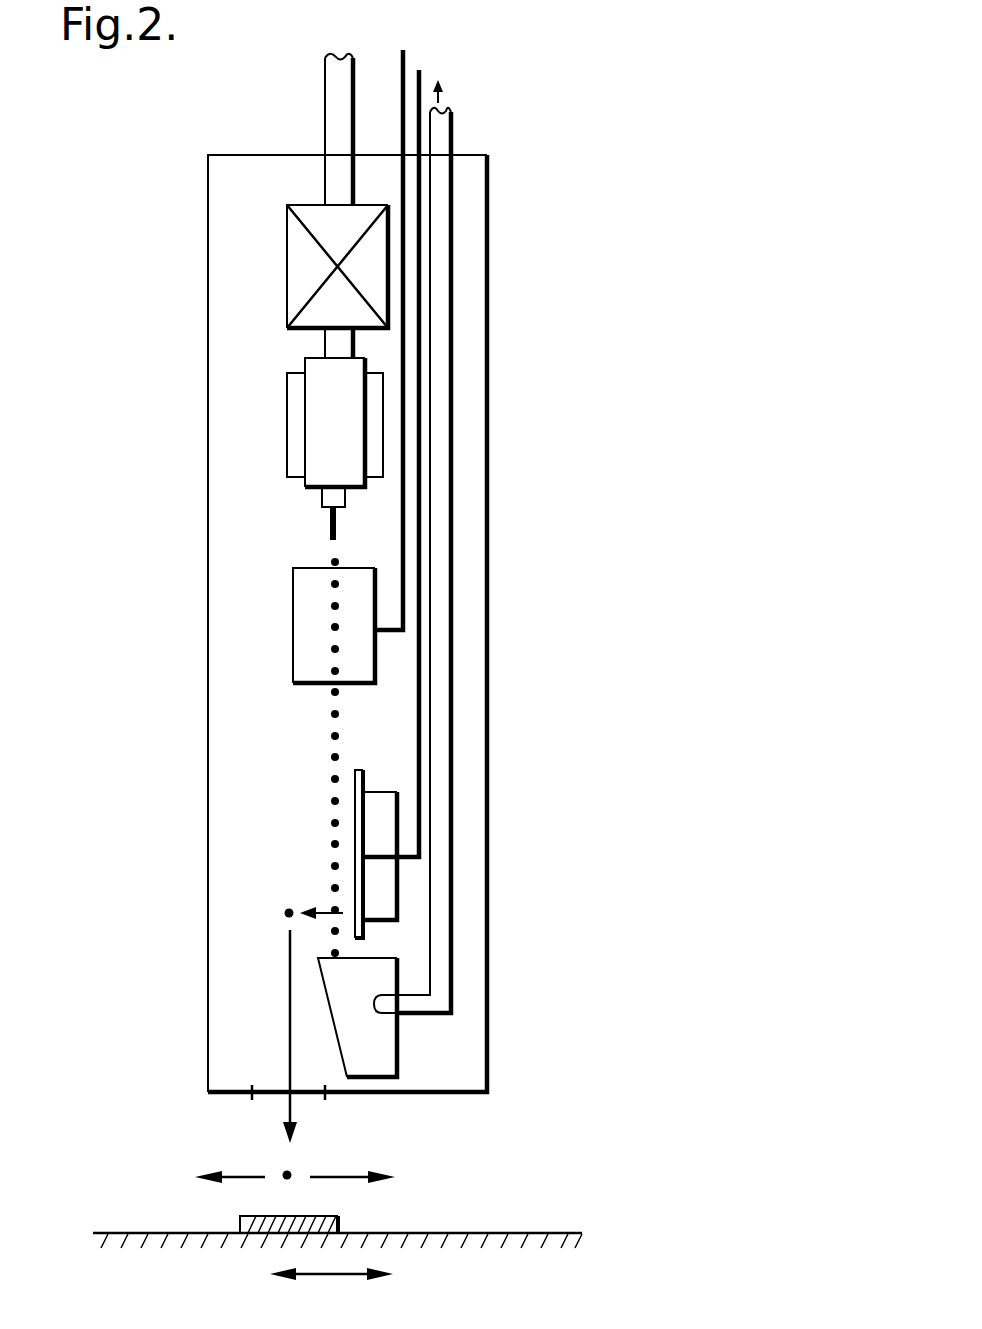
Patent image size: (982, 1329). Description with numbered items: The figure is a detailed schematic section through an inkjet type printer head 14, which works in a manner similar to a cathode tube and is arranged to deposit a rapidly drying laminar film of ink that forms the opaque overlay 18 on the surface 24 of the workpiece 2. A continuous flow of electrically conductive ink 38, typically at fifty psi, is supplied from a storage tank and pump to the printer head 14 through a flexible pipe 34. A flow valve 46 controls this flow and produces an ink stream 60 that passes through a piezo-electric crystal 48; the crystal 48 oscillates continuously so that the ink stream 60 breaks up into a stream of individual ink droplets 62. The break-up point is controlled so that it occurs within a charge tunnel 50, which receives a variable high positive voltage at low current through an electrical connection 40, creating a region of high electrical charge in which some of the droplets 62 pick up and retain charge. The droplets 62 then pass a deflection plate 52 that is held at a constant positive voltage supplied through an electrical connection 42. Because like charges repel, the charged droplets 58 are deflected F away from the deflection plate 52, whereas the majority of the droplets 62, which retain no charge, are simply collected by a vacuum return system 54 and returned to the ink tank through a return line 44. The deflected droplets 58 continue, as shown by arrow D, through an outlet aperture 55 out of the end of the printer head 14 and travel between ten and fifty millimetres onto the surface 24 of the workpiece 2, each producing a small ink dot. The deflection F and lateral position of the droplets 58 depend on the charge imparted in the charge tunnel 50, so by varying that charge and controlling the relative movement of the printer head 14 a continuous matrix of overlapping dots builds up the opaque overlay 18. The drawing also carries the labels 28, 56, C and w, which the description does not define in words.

The workpiece 2 is at (357, 1244).
The printer head 14 is at (487, 282).
The opaque overlay 18 is at (338, 1222).
The surface 24 is at (512, 1233).
The impact point 28 is at (293, 1170).
The flexible pipe 34 is at (331, 126).
The electrically conductive ink 38 is at (328, 48).
The electrical connection 40 is at (402, 72).
The electrical connection 42 is at (421, 78).
The return line 44 is at (440, 93).
The flow valve 46 is at (300, 269).
The piezo-electric crystal 48 is at (287, 427).
The charge tunnel 50 is at (297, 620).
The deflection plate 52 is at (378, 800).
The vacuum return system 54 is at (375, 1050).
The outlet aperture 55 is at (265, 1097).
The opening 56 is at (455, 1093).
The deflected droplets 58 is at (285, 913).
The ink stream 60 is at (330, 522).
The ink droplets 62 is at (333, 720).
The deflection F is at (328, 913).
The arrow D is at (289, 1035).
The scanning direction C is at (295, 1164).
The strip width w is at (331, 1286).